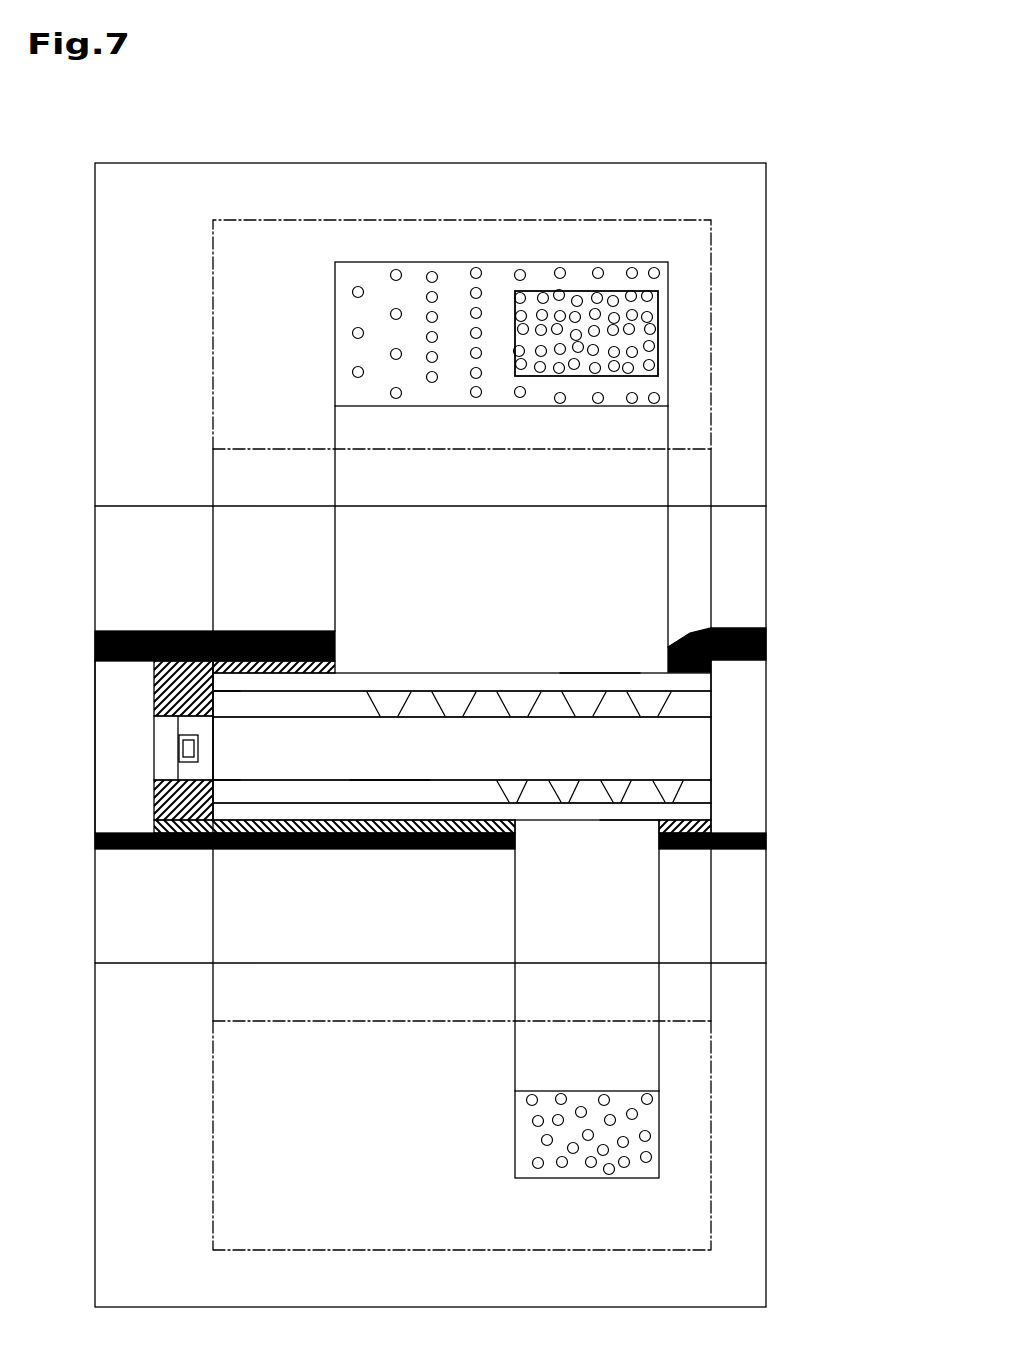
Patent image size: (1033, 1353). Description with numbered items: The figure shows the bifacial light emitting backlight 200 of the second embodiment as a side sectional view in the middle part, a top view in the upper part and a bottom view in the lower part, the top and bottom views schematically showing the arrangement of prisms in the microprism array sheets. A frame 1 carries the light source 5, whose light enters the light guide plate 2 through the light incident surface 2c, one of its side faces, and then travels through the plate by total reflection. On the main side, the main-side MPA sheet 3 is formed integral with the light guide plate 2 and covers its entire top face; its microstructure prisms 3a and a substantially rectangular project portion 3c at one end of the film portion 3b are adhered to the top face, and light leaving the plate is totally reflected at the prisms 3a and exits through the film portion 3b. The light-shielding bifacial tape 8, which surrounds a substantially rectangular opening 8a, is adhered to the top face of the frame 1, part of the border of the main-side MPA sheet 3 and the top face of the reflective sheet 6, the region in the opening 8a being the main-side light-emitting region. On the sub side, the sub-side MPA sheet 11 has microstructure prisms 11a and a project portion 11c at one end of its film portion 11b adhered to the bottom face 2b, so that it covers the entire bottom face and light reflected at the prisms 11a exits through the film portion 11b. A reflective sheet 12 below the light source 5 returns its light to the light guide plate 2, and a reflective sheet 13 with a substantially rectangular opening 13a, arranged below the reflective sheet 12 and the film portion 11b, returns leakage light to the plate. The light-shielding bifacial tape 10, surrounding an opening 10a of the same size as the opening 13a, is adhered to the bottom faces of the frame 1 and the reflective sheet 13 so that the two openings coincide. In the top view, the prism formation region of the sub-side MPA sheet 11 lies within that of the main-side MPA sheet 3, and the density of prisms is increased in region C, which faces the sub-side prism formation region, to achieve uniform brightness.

The frame 1 is at (95, 762).
The light guide plate 2 is at (693, 750).
The bottom face 2b is at (390, 780).
The light incident surface 2c is at (212, 749).
The main-side microprism array sheet 3 is at (601, 673).
The microstructure prisms 3a is at (432, 280).
The film portion 3b is at (262, 220).
The project portion 3c is at (233, 700).
The light source 5 is at (154, 742).
The reflective sheet 6 is at (154, 690).
The light-shielding bifacial tape 8 is at (766, 195).
The opening 8a is at (612, 262).
The light-shielding bifacial tape 10 is at (766, 1000).
The opening 10a is at (518, 822).
The sub-side microprism array sheet 11 is at (627, 822).
The microstructure prisms 11a is at (650, 795).
The film portion 11b is at (693, 813).
The project portion 11c is at (233, 786).
The reflective sheet 12 is at (154, 800).
The reflective sheet 13 is at (154, 824).
The opening 13a is at (515, 822).
The bifacial light emitting backlight 200 is at (178, 600).
The region C is at (533, 292).